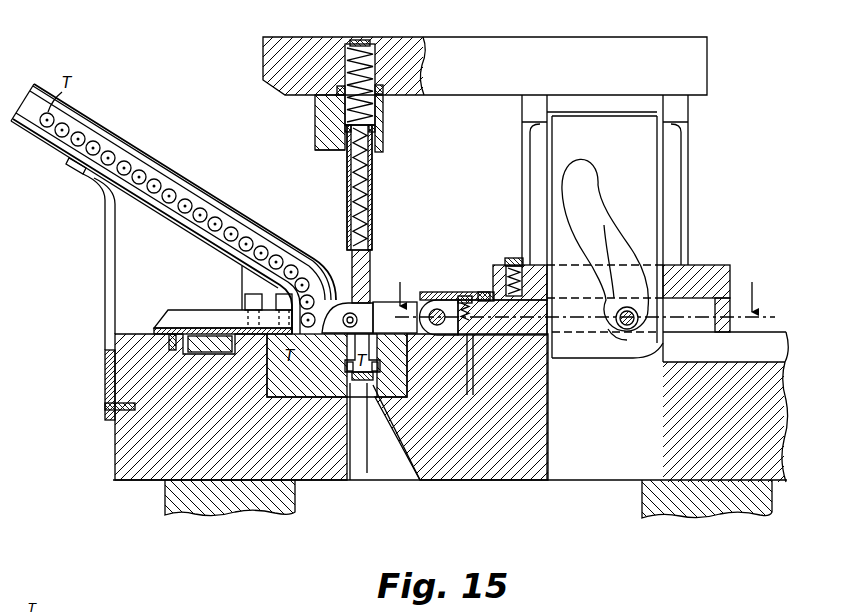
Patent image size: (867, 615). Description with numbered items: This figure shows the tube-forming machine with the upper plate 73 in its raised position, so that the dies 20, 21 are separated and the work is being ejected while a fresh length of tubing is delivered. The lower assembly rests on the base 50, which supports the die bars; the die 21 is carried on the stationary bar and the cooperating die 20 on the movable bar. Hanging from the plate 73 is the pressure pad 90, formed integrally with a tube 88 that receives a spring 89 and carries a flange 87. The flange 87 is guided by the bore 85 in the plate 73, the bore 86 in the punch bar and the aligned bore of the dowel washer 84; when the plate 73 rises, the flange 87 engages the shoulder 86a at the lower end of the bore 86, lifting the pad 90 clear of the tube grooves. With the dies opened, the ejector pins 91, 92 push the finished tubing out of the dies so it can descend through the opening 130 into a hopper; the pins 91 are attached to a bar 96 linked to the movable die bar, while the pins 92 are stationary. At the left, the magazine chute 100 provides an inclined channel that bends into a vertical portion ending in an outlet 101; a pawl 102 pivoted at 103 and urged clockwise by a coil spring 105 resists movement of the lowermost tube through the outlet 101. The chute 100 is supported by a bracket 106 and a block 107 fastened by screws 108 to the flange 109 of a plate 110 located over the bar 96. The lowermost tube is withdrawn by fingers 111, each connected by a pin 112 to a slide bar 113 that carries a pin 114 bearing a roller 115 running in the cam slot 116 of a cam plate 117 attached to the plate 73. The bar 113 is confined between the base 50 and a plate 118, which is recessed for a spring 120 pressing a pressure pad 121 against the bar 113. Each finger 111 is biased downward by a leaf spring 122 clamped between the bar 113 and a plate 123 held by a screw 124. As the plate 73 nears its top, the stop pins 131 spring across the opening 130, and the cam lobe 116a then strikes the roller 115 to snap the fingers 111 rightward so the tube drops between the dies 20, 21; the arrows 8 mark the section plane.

The die 20 is at (405, 366).
The die 21 is at (302, 364).
The base 50 is at (640, 483).
The plate 73 is at (707, 62).
The dowel washer 84 is at (340, 92).
The bore 85 is at (385, 60).
The bore 86 is at (385, 108).
The shoulder 86a is at (338, 148).
The flange 87 is at (378, 129).
The tube 88 is at (372, 172).
The spring 89 is at (360, 40).
The pressure pad 90 is at (366, 290).
The ejector pin 91 is at (350, 400).
The ejector pin 92 is at (373, 400).
The bar 96 is at (210, 354).
The chute 100 is at (58, 150).
The outlet 101 is at (340, 296).
The pawl 102 is at (332, 284).
The pivot 103 is at (316, 258).
The coil spring 105 is at (325, 264).
The bracket 106 is at (105, 275).
The block 107 is at (242, 270).
The screw 108 is at (245, 296).
The flange 109 is at (185, 310).
The plate 110 is at (158, 331).
The finger 111 is at (430, 292).
The pin 112 is at (463, 296).
The slide bar 113 is at (517, 265).
The pin 114 is at (627, 306).
The roller 115 is at (610, 298).
The cam slot 116 is at (590, 186).
The cam lobe 116a is at (612, 330).
The cam plate 117 is at (652, 165).
The plate 118 is at (705, 275).
The spring 120 is at (520, 262).
The pressure pad 121 is at (530, 317).
The leaf spring 122 is at (397, 300).
The plate 123 is at (510, 258).
The screw 124 is at (486, 292).
The opening 130 is at (372, 482).
The stop pin 131 is at (373, 428).
The section line 8- 8 is at (575, 304).